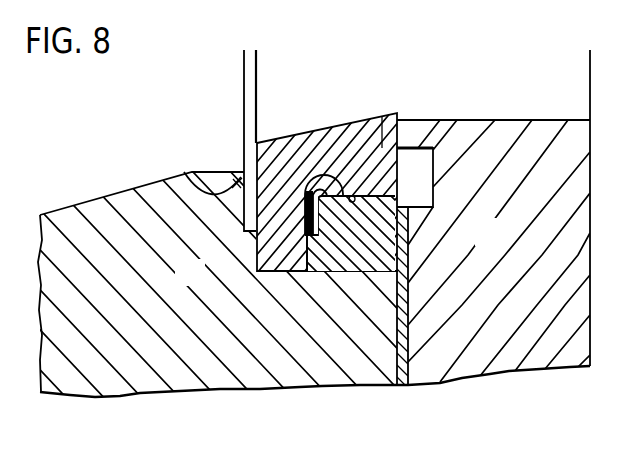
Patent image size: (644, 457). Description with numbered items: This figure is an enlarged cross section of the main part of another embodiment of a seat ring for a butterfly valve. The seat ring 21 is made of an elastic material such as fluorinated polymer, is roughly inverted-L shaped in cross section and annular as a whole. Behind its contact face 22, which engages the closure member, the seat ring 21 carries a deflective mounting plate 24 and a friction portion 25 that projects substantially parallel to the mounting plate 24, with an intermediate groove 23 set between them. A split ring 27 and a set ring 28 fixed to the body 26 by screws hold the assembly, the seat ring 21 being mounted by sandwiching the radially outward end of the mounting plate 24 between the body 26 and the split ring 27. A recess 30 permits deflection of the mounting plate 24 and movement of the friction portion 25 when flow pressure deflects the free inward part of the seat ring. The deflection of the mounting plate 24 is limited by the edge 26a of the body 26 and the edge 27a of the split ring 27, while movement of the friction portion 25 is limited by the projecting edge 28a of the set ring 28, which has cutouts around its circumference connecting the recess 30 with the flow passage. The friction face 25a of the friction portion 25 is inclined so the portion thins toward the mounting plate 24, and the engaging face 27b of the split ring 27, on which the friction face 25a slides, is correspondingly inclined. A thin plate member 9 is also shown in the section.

The plate 9 is at (409, 328).
The seat ring 21 is at (276, 139).
The contact face 22 is at (322, 128).
The intermediate groove 23 is at (306, 212).
The mounting plate 24 is at (273, 188).
The friction portion 25 is at (379, 111).
The friction face 25a is at (363, 195).
The body 26 is at (201, 283).
The edge of the body 26a is at (186, 190).
The split ring 27 is at (322, 228).
The edge of the split ring 27a is at (325, 204).
The engaging face 27b is at (374, 200).
The set ring 28 is at (505, 243).
The projecting edge 28a is at (418, 133).
The recess 30 is at (425, 163).